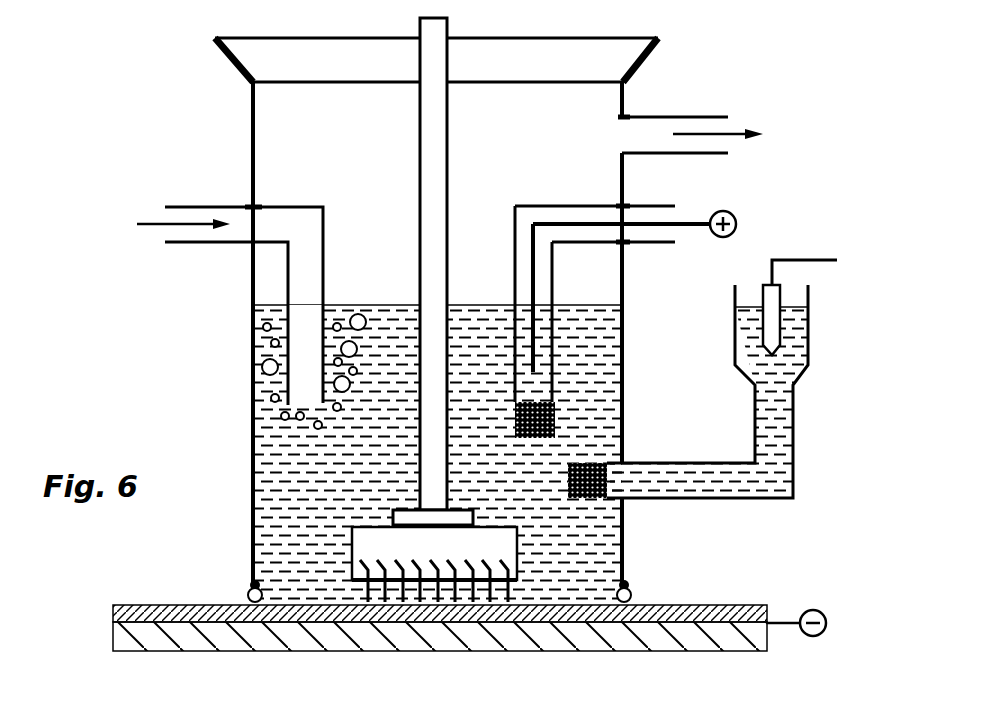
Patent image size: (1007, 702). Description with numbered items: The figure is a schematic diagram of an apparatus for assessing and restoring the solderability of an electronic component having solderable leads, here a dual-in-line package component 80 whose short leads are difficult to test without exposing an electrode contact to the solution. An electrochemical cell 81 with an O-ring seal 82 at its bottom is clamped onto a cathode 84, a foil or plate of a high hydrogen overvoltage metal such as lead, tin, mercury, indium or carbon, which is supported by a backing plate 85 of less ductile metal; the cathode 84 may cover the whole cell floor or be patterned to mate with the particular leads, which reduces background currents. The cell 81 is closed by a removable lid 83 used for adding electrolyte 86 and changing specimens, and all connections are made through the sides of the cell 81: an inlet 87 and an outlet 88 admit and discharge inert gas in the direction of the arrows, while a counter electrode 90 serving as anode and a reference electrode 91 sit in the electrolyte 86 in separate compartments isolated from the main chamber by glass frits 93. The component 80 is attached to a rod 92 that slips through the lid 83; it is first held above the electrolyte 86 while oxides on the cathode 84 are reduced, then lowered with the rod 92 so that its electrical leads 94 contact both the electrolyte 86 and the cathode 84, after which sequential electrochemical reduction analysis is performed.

The dual-in-line package component 80 is at (443, 553).
The electrochemical cell 81 is at (252, 453).
The O-ring seal 82 is at (246, 591).
The lid 83 is at (354, 73).
The cathode 84 is at (165, 608).
The backing plate 85 is at (176, 646).
The electrolyte 86 is at (437, 455).
The inlet 87 is at (212, 207).
The outlet 88 is at (656, 117).
The counter electrode 90 is at (683, 224).
The reference electrode 91 is at (788, 260).
The rod 92 is at (420, 165).
The glass frits 93 is at (583, 463).
The electrical leads 94 is at (510, 592).